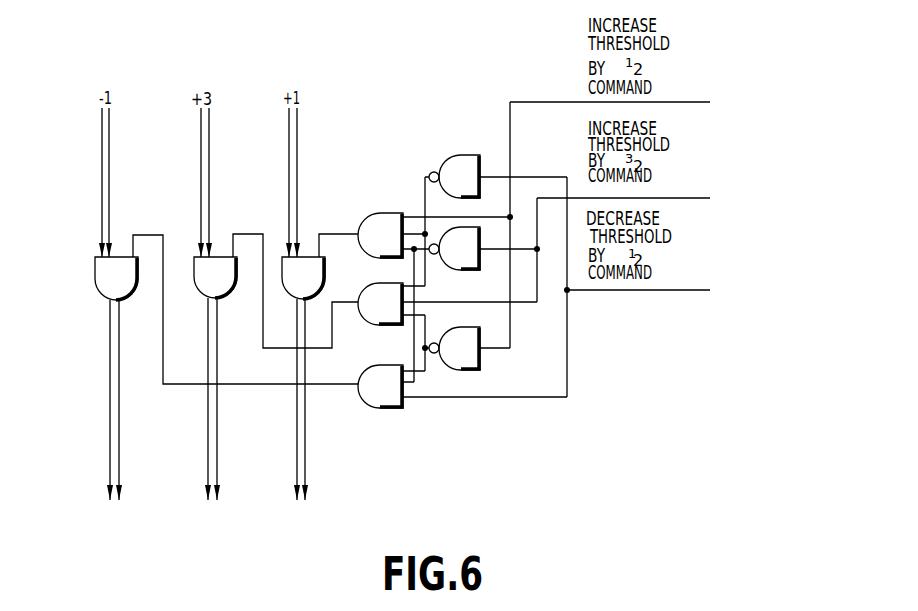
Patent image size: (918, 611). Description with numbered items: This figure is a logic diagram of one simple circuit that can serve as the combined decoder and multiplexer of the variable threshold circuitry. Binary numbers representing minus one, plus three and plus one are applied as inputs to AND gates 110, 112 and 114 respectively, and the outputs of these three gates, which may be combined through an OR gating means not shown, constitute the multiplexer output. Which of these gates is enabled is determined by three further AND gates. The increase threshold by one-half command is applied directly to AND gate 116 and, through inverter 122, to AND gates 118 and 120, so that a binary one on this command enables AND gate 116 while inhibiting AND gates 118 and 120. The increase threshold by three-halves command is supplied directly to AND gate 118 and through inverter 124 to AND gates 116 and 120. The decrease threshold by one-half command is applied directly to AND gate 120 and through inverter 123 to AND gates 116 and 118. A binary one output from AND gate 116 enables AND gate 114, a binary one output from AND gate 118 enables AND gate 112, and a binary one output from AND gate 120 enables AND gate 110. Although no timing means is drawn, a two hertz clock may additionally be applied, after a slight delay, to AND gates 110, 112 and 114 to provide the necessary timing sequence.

The AND gate 110 is at (94, 270).
The AND gate 112 is at (193, 259).
The AND gate 114 is at (283, 259).
The AND gate 116 is at (383, 213).
The AND gate 118 is at (378, 326).
The AND gate 120 is at (392, 409).
The inverter 122 is at (481, 371).
The inverter 123 is at (457, 155).
The inverter 124 is at (458, 273).